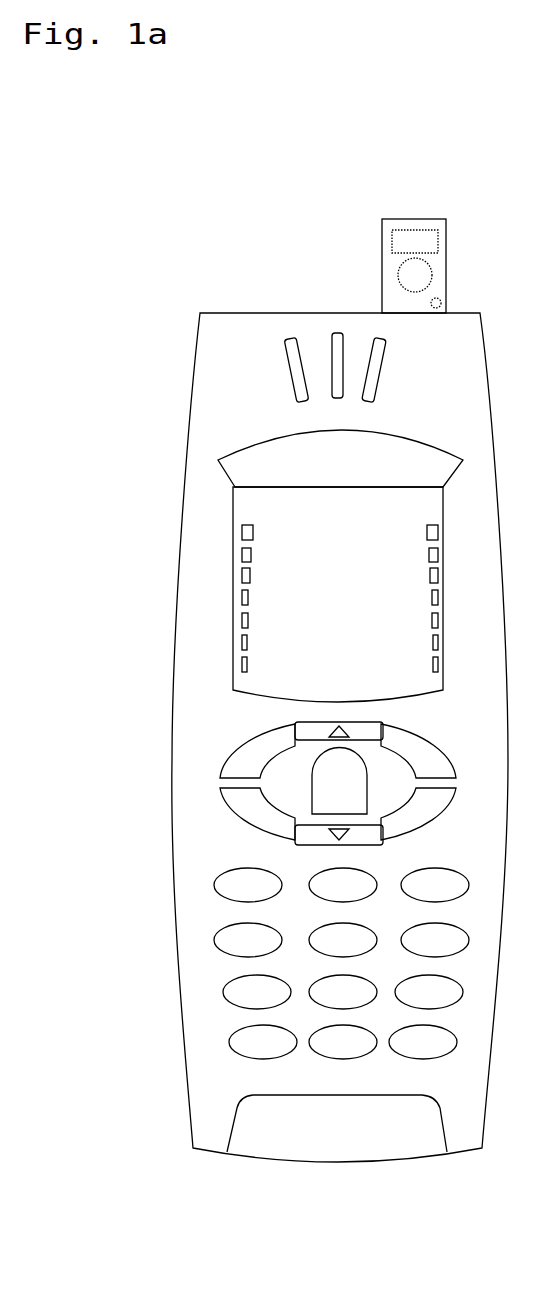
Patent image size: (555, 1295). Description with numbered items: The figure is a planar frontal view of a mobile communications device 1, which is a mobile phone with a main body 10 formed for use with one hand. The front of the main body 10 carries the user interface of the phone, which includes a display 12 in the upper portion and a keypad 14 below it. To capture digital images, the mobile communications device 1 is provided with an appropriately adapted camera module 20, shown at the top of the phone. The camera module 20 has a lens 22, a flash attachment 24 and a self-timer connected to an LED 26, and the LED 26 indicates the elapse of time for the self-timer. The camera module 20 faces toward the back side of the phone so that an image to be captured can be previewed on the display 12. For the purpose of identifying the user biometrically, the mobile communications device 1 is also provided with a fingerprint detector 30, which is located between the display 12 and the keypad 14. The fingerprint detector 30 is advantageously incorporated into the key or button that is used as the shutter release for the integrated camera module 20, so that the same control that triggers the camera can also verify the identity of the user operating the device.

The mobile communications device 1 is at (148, 320).
The main body 10 is at (185, 442).
The display 12 is at (310, 573).
The keypad 14 is at (228, 887).
The camera module 20 is at (446, 230).
The lens 22 is at (398, 270).
The flash attachment 24 is at (412, 230).
The LED 26 is at (443, 300).
The fingerprint detector 30 is at (312, 785).